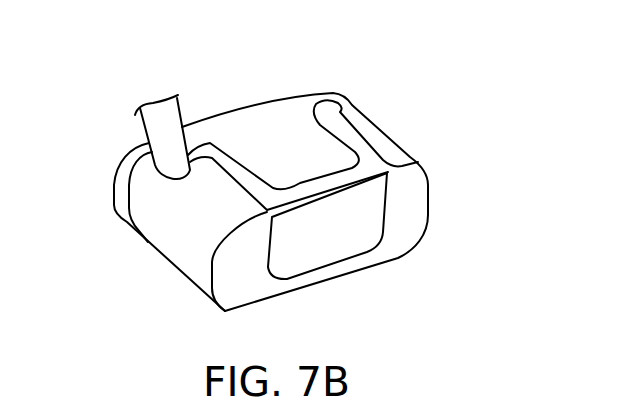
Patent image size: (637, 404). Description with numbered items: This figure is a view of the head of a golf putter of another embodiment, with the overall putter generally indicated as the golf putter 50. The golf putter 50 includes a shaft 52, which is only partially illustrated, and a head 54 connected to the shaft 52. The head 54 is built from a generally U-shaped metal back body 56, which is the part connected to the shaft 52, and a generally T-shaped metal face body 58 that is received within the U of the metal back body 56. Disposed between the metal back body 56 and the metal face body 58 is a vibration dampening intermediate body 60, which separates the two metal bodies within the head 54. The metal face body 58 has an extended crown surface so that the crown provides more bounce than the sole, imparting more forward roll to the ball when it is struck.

The golf putter 50 is at (402, 92).
The shaft 52 is at (152, 103).
The head 54 is at (175, 272).
The metal back body 56 is at (407, 192).
The metal face body 58 is at (282, 120).
The vibration dampening intermediate body 60 is at (325, 240).